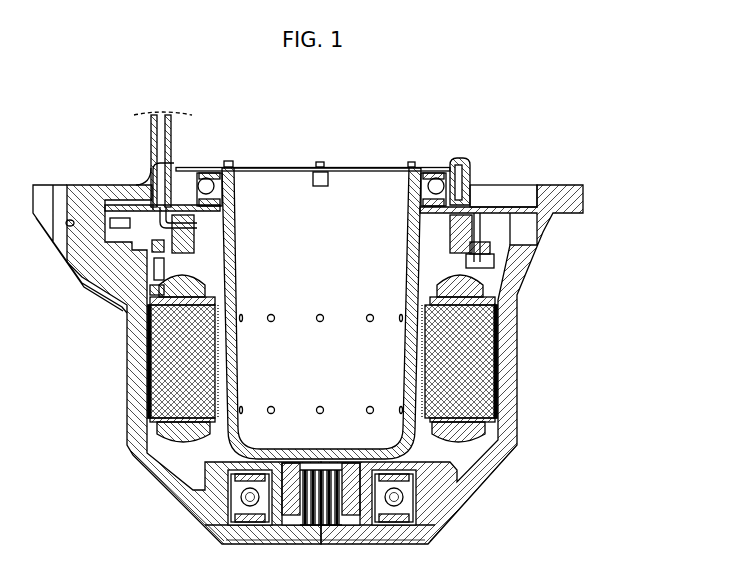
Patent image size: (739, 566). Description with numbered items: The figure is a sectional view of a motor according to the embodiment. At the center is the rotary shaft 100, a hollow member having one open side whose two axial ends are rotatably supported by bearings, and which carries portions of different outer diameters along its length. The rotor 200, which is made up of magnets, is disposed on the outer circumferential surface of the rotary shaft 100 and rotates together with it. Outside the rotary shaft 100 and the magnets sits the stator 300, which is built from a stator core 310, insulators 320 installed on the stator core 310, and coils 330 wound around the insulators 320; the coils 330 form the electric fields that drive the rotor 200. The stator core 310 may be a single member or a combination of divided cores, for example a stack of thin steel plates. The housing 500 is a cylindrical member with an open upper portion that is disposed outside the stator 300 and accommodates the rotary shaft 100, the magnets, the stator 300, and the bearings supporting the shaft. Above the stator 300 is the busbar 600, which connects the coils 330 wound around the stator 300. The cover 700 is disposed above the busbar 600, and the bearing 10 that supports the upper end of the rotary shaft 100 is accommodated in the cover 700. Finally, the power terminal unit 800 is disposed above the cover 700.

The bearing 10 is at (430, 171).
The rotary shaft 100 is at (421, 436).
The rotor 200 is at (429, 404).
The stator 300 is at (426, 347).
The stator core 310 is at (485, 361).
The insulator 320 is at (483, 301).
The coil 330 is at (468, 286).
The housing 500 is at (489, 511).
The busbar 600 is at (497, 233).
The cover 700 is at (465, 149).
The power terminal unit 800 is at (132, 141).